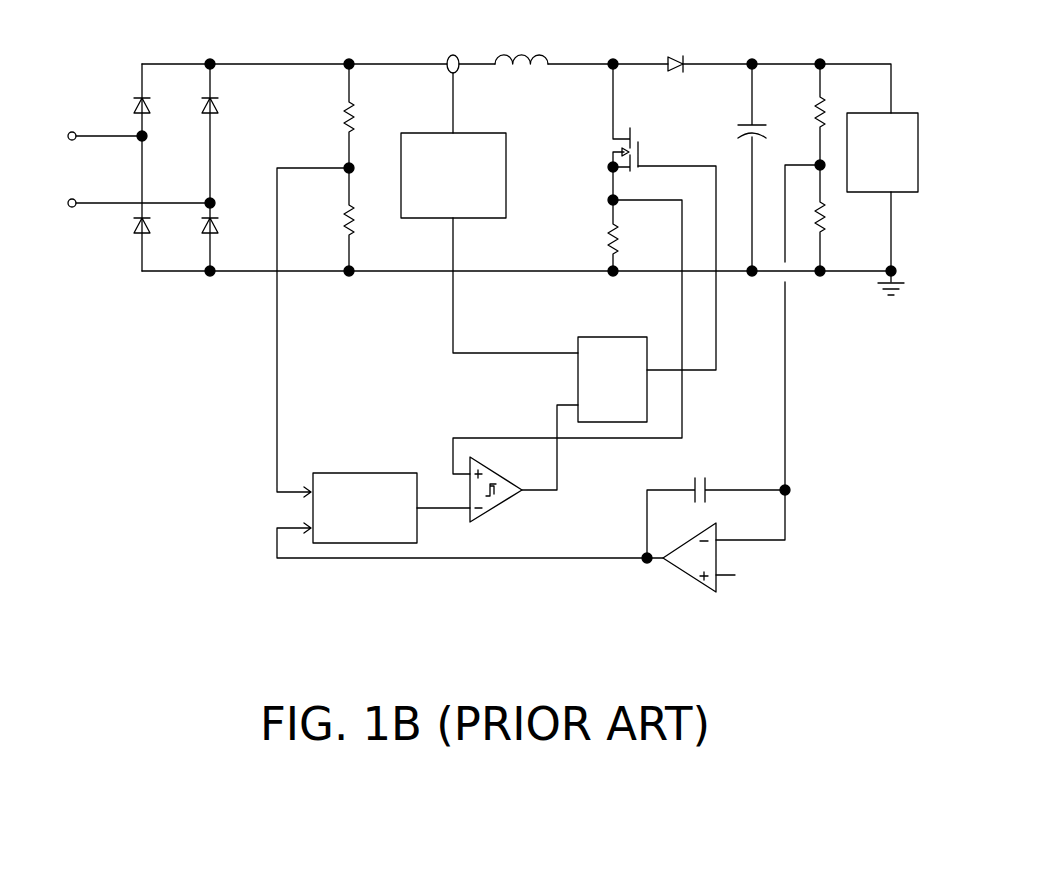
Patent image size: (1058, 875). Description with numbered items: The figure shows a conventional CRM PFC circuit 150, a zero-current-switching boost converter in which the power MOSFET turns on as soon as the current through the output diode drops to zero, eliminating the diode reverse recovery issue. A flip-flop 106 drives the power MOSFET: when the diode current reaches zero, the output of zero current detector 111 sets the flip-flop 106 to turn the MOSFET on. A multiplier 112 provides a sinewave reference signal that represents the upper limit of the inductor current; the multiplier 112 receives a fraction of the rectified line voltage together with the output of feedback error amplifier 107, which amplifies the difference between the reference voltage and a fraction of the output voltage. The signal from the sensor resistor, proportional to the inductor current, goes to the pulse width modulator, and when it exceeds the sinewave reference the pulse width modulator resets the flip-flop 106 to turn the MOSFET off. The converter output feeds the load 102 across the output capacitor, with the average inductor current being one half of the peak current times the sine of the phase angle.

The CRM PFC circuit 150 is at (863, 644).
The zero current detector 111 is at (485, 133).
The flip-flop 106 is at (578, 378).
The multiplier 112 is at (368, 473).
The feedback error amplifier 107 is at (690, 580).
The load 102 is at (870, 192).